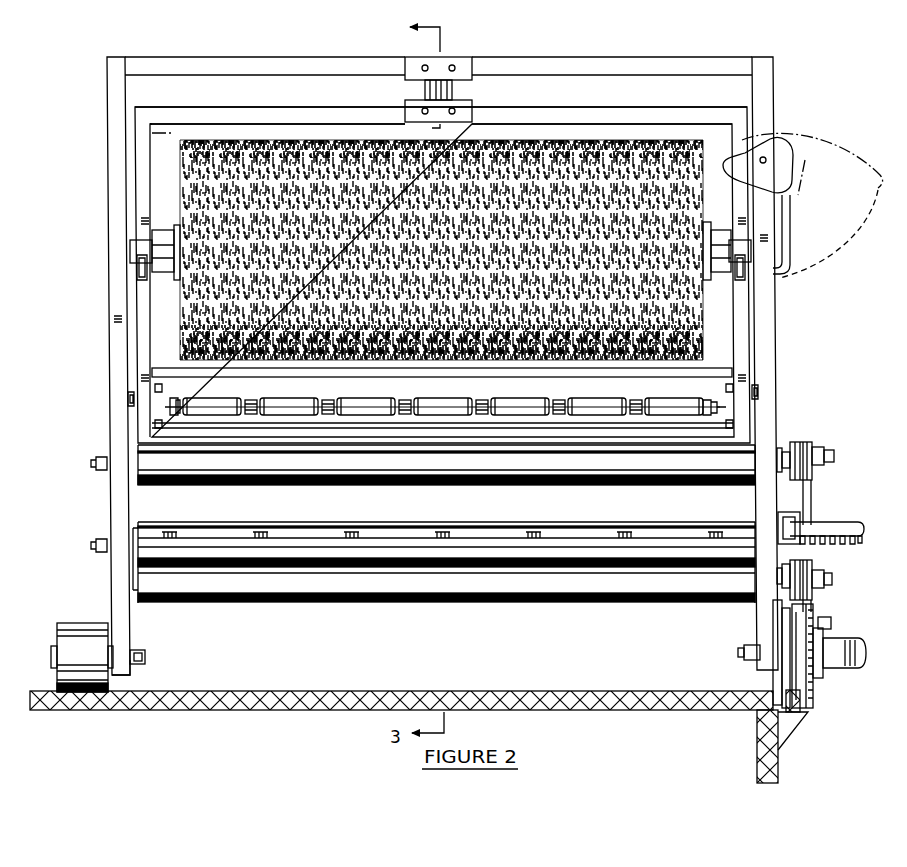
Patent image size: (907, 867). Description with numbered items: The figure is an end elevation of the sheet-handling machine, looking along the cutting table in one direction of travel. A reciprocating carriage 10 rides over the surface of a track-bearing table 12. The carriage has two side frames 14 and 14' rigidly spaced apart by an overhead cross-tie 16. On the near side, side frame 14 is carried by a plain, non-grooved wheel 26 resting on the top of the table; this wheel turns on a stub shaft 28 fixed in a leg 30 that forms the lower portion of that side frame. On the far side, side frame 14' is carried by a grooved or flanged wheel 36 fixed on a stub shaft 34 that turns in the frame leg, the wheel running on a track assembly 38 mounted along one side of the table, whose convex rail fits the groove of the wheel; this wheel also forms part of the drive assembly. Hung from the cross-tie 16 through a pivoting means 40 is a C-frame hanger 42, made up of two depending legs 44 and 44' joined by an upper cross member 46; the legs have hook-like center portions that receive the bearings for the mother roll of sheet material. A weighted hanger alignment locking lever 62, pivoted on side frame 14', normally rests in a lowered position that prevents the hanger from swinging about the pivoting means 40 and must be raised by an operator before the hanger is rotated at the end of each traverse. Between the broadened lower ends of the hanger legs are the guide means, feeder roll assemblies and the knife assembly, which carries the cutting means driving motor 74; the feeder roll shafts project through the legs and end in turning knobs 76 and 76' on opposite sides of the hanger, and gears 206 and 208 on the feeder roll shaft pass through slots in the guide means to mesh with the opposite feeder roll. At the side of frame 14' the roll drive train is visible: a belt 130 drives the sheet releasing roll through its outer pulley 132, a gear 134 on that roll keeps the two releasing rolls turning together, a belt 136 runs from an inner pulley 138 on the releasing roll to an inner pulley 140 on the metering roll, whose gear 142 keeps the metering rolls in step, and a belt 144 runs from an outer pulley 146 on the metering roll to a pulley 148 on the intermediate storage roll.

The reciprocating carriage 10 is at (445, 347).
The track-bearing table 12 is at (504, 690).
The side frame 14 is at (95, 366).
The side frame 14' is at (791, 363).
The overhead cross-tie 16 is at (250, 56).
The plain wheel 26 is at (62, 622).
The stub shaft 28 is at (148, 657).
The leg 30 is at (137, 635).
The stub shaft 34 is at (742, 654).
The grooved wheel 36 is at (791, 637).
The track assembly 38 is at (812, 710).
The pivoting means 40 is at (422, 91).
The C-frame hanger 42 is at (442, 259).
The depending member or leg 44 is at (390, 250).
The depending member or leg 44' is at (767, 281).
The upper cross member 46 is at (273, 107).
The hanger alignment locking lever 62 is at (794, 208).
The cutting means driving motor 74 is at (180, 397).
The turning knob 76 is at (781, 392).
The turning knob 76' is at (105, 391).
The belt 130 is at (822, 622).
The outer pulley 132 is at (816, 600).
The gear 134 is at (785, 604).
The belt 136 is at (800, 512).
The inner pulley 138 is at (828, 578).
The inner pulley 140 is at (804, 443).
The gear 142 is at (783, 440).
The belt 144 is at (813, 488).
The outer pulley 146 is at (830, 446).
The pulley 148 is at (816, 562).
The gear 206 is at (192, 400).
The gear 208 is at (712, 398).